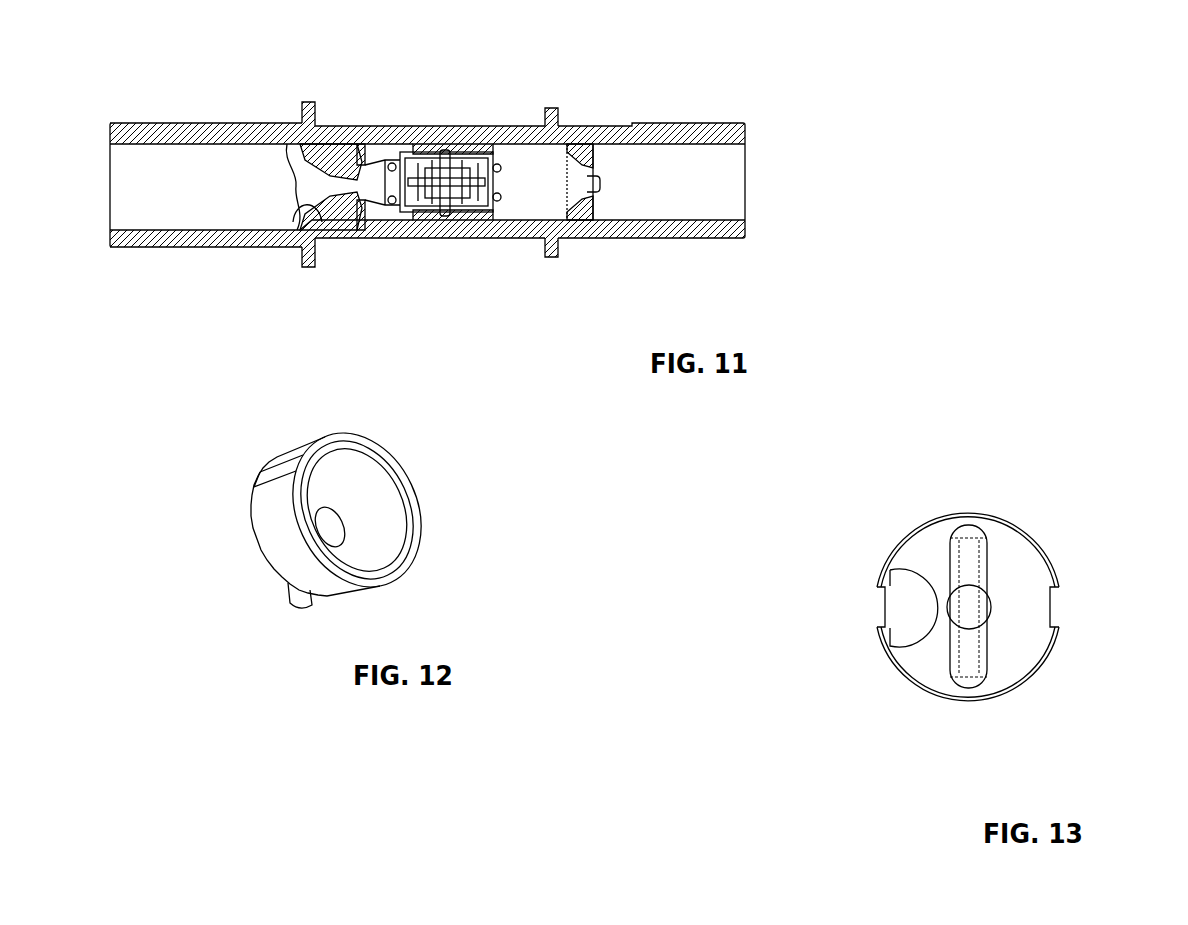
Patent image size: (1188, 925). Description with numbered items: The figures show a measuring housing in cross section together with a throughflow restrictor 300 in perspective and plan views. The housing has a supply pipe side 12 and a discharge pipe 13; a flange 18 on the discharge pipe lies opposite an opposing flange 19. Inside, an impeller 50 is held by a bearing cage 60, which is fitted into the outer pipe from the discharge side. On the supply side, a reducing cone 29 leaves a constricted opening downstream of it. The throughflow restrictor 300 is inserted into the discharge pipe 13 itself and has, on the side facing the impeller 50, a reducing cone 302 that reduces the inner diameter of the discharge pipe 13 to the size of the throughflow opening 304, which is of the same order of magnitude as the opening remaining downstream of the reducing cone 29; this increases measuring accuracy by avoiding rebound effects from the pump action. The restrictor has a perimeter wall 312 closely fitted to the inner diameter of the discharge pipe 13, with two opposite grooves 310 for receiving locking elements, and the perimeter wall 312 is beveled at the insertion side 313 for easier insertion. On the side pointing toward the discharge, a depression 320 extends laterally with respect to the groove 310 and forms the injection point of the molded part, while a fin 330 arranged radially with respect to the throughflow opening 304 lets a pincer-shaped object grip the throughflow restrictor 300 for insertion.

In FIG. 11, the supply pipe side 12 is at (184, 226).
In FIG. 11, the discharge pipe 13 is at (710, 212).
In FIG. 11, the flange 18 is at (552, 108).
In FIG. 11, the opposing flange 19 is at (309, 102).
In FIG. 11, the reducing cone 29 is at (305, 206).
In FIG. 11, the impeller 50 is at (470, 220).
In FIG. 11, the bearing cage 60 is at (465, 150).
In FIG. 11, the throughflow restrictor 300 is at (583, 222).
In FIG. 12, the throughflow restrictor 300 is at (220, 542).
In FIG. 11, the reducing cone 302 is at (572, 200).
In FIG. 12, the reducing cone 302 is at (360, 472).
In FIG. 11, the throughflow opening 304 is at (605, 185).
In FIG. 13, the throughflow opening 304 is at (976, 608).
In FIG. 12, the grooves 310 is at (257, 497).
In FIG. 13, the grooves 310 is at (877, 610).
In FIG. 12, the perimeter wall 312 is at (292, 570).
In FIG. 13, the perimeter wall 312 is at (1026, 532).
In FIG. 12, the insertion side 313 is at (350, 587).
In FIG. 11, the depression 320 is at (598, 158).
In FIG. 13, the depression 320 is at (903, 586).
In FIG. 13, the fin 330 is at (958, 670).